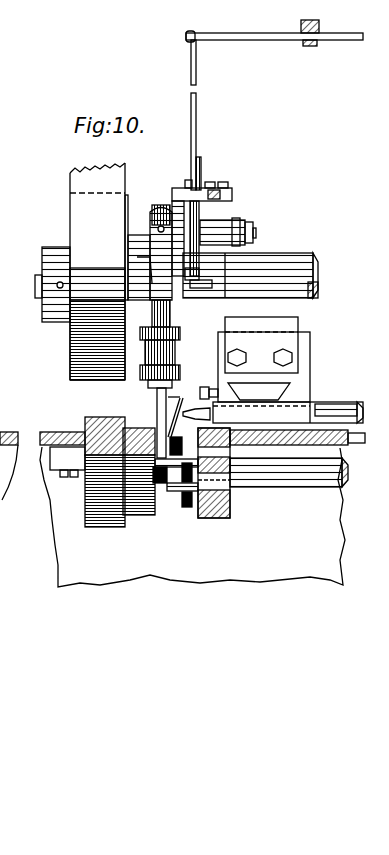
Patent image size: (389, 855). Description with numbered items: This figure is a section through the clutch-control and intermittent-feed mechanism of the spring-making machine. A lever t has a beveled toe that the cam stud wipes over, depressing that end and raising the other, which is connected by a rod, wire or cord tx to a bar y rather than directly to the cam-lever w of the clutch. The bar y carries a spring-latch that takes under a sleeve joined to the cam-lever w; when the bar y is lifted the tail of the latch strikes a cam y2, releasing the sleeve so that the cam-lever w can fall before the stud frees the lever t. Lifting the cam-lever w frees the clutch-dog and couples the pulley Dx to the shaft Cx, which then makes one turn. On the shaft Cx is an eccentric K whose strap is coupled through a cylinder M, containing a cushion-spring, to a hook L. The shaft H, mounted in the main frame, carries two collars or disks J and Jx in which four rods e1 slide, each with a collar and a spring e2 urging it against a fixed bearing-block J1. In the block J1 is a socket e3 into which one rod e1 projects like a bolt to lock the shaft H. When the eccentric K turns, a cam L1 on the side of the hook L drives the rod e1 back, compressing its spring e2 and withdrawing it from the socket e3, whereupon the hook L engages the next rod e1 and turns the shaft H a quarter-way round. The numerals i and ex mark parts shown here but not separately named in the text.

The lever t is at (270, 37).
The rod, wire, or cord tx is at (197, 124).
The cam y2 is at (202, 163).
The bar y is at (180, 240).
The cam-lever w is at (232, 218).
The shaft i is at (184, 242).
The pulley Dx is at (76, 210).
The shaft Cx is at (35, 285).
The eccentric K is at (156, 208).
The cylinder M is at (180, 351).
The hook L is at (157, 413).
The cam L1 is at (183, 403).
The socket e3 is at (113, 432).
The shaft H is at (294, 480).
The fixed bearing-block J1 is at (96, 527).
The collar or disk J is at (145, 515).
The collar or disk Jx is at (226, 520).
The bolt ex is at (121, 460).
The rod e1 is at (178, 503).
The spring e2 is at (198, 510).